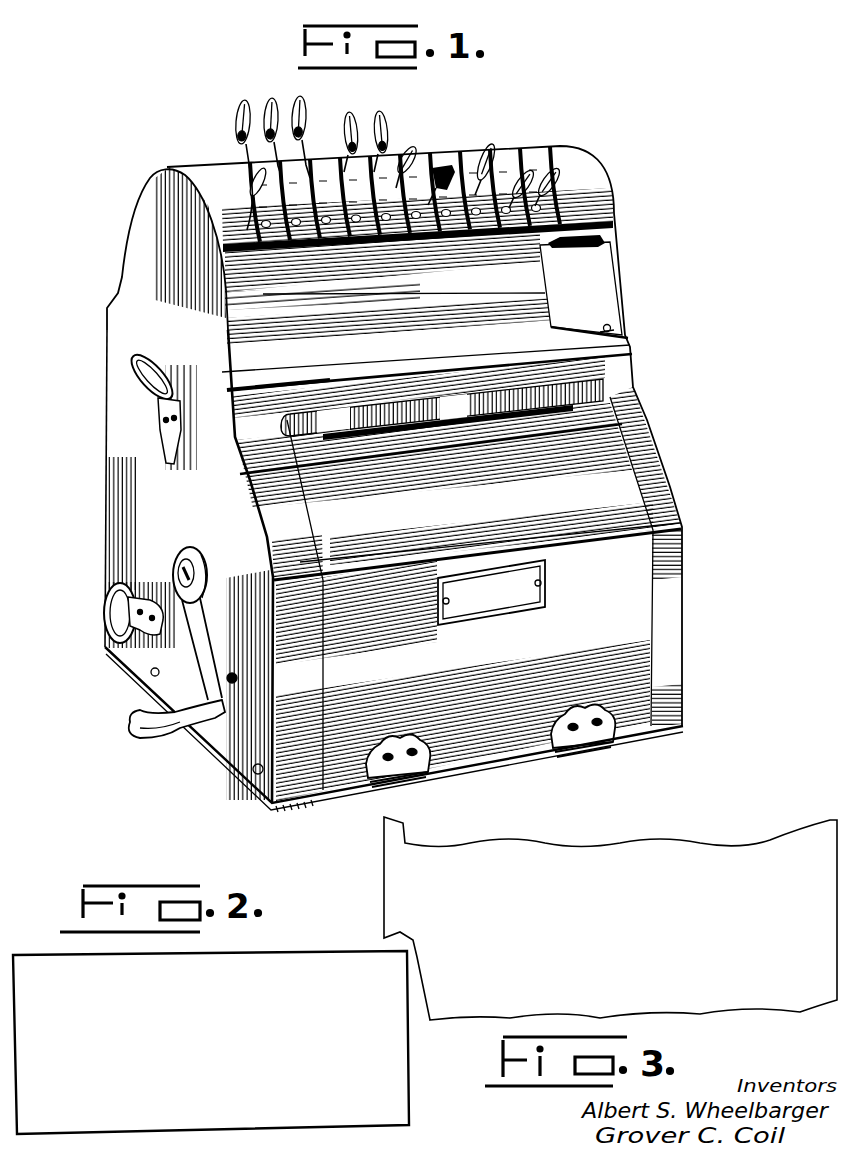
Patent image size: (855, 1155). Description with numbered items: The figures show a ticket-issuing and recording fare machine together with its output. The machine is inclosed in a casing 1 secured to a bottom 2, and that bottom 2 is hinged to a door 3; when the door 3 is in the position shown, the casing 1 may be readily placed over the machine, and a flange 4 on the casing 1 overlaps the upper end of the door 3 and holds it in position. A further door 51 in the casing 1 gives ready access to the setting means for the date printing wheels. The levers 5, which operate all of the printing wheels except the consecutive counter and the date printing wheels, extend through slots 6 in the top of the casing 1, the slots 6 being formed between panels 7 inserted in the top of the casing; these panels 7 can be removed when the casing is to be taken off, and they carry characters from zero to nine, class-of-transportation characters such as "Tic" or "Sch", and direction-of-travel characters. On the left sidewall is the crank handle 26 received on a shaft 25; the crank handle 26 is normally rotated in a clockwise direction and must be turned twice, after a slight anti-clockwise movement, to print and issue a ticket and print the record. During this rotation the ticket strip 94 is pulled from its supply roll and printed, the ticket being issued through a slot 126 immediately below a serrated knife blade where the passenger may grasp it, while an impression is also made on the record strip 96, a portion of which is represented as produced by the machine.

In FIG. 1, the casing 1 is at (113, 333).
In FIG. 1, the bottom 2 is at (310, 796).
In FIG. 1, the door 3 is at (630, 605).
In FIG. 1, the flange 4 is at (607, 382).
In FIG. 1, the levers 5 is at (305, 130).
In FIG. 1, the door 51 is at (607, 300).
In FIG. 1, the slots 6 is at (380, 162).
In FIG. 1, the panels 7 is at (458, 150).
In FIG. 1, the shaft 25 is at (188, 574).
In FIG. 1, the crank handle 26 is at (197, 633).
In FIG. 2, the ticket strip 94 is at (327, 957).
In FIG. 3, the record strip 96 is at (744, 842).
In FIG. 1, the slot 126 is at (380, 437).